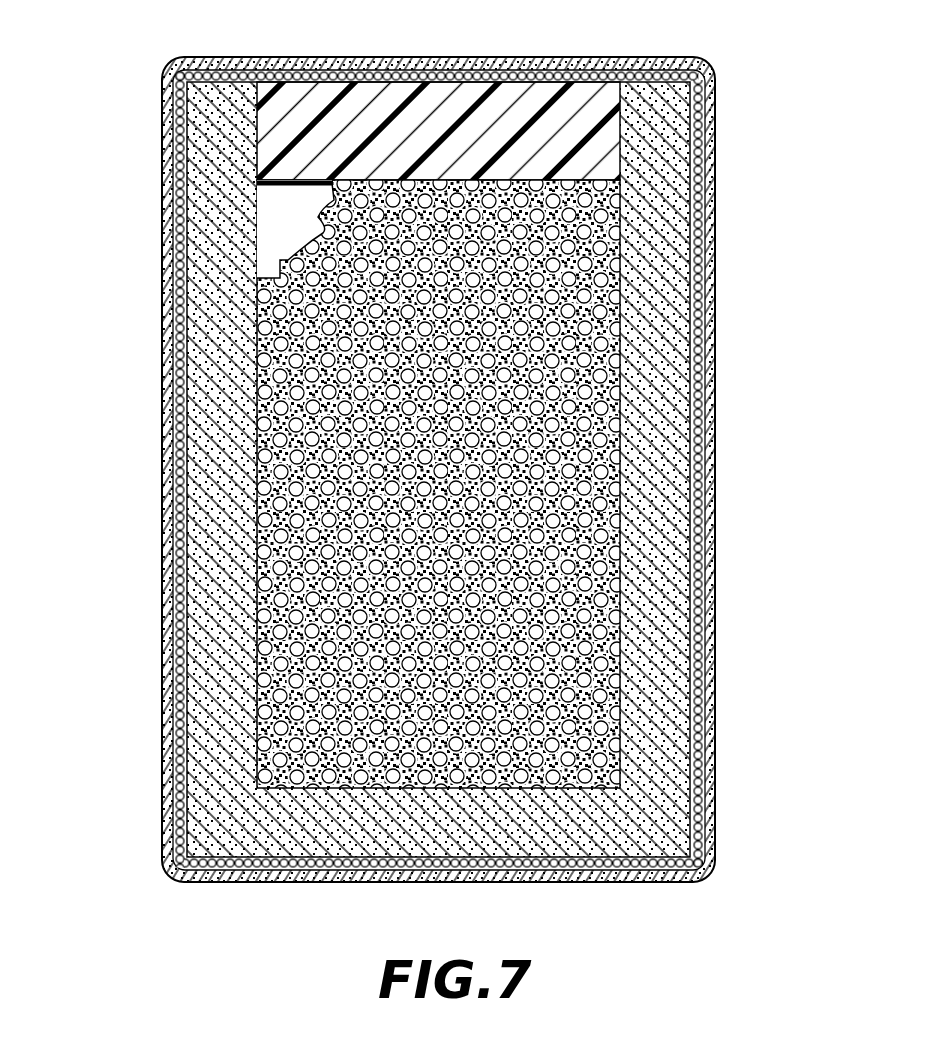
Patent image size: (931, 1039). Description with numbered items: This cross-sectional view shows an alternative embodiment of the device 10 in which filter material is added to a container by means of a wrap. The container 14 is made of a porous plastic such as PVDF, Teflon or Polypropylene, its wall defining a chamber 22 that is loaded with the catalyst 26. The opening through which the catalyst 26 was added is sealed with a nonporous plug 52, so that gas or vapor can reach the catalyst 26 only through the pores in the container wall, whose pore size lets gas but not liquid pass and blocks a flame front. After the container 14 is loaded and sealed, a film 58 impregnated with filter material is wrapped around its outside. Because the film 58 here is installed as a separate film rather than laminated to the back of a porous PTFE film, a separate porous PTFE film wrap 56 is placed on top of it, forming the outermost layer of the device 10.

The device 10 is at (150, 138).
The container 14 is at (184, 781).
The chamber 22 is at (280, 222).
The catalyst 26 is at (597, 492).
The nonporous plug 52 is at (457, 95).
The porous PTFE film wrap 56 is at (716, 705).
The film impregnated with filter material 58 is at (716, 637).